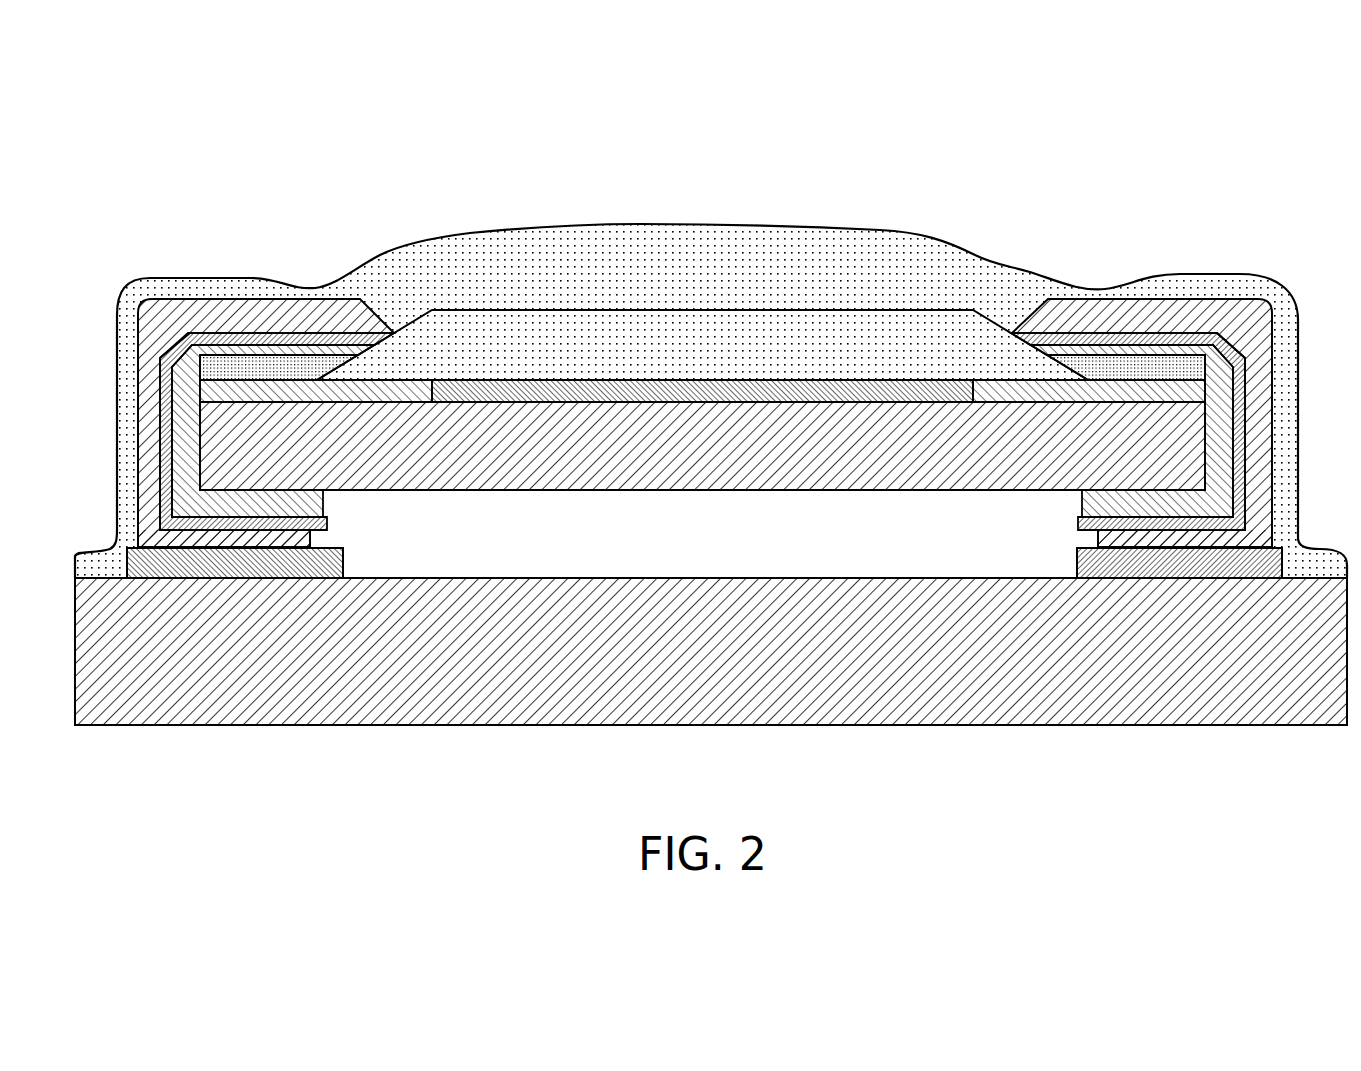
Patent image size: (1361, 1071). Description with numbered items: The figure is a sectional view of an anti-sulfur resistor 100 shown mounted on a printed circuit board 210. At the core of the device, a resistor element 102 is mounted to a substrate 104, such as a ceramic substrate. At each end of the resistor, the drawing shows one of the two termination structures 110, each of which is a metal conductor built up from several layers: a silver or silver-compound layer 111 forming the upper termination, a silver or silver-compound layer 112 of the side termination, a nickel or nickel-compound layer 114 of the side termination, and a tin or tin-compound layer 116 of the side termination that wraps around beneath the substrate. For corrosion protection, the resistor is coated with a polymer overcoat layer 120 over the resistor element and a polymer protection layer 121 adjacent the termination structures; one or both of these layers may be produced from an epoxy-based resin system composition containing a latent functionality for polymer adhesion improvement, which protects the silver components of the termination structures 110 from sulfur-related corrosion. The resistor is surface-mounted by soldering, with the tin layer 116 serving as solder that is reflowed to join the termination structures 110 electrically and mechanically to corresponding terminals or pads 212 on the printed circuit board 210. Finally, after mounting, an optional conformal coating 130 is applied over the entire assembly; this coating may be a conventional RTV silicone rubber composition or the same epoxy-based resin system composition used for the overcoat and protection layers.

The anti-sulfur resistor 100 is at (711, 324).
The resistor element 102 is at (706, 388).
The substrate 104 is at (662, 432).
The termination structure 110 is at (338, 210).
The Ag layer of upper termination 111 is at (362, 380).
The Ag layer of side termination 112 is at (188, 373).
The Ni layer of side termination 114 is at (323, 518).
The Sn layer of side termination 116 is at (308, 540).
The polymer overcoat layer 120 is at (530, 340).
The polymer protection layer 121 is at (263, 370).
The conformal coating 130 is at (875, 267).
The printed circuit board 210 is at (1257, 667).
The pads 212 is at (218, 563).